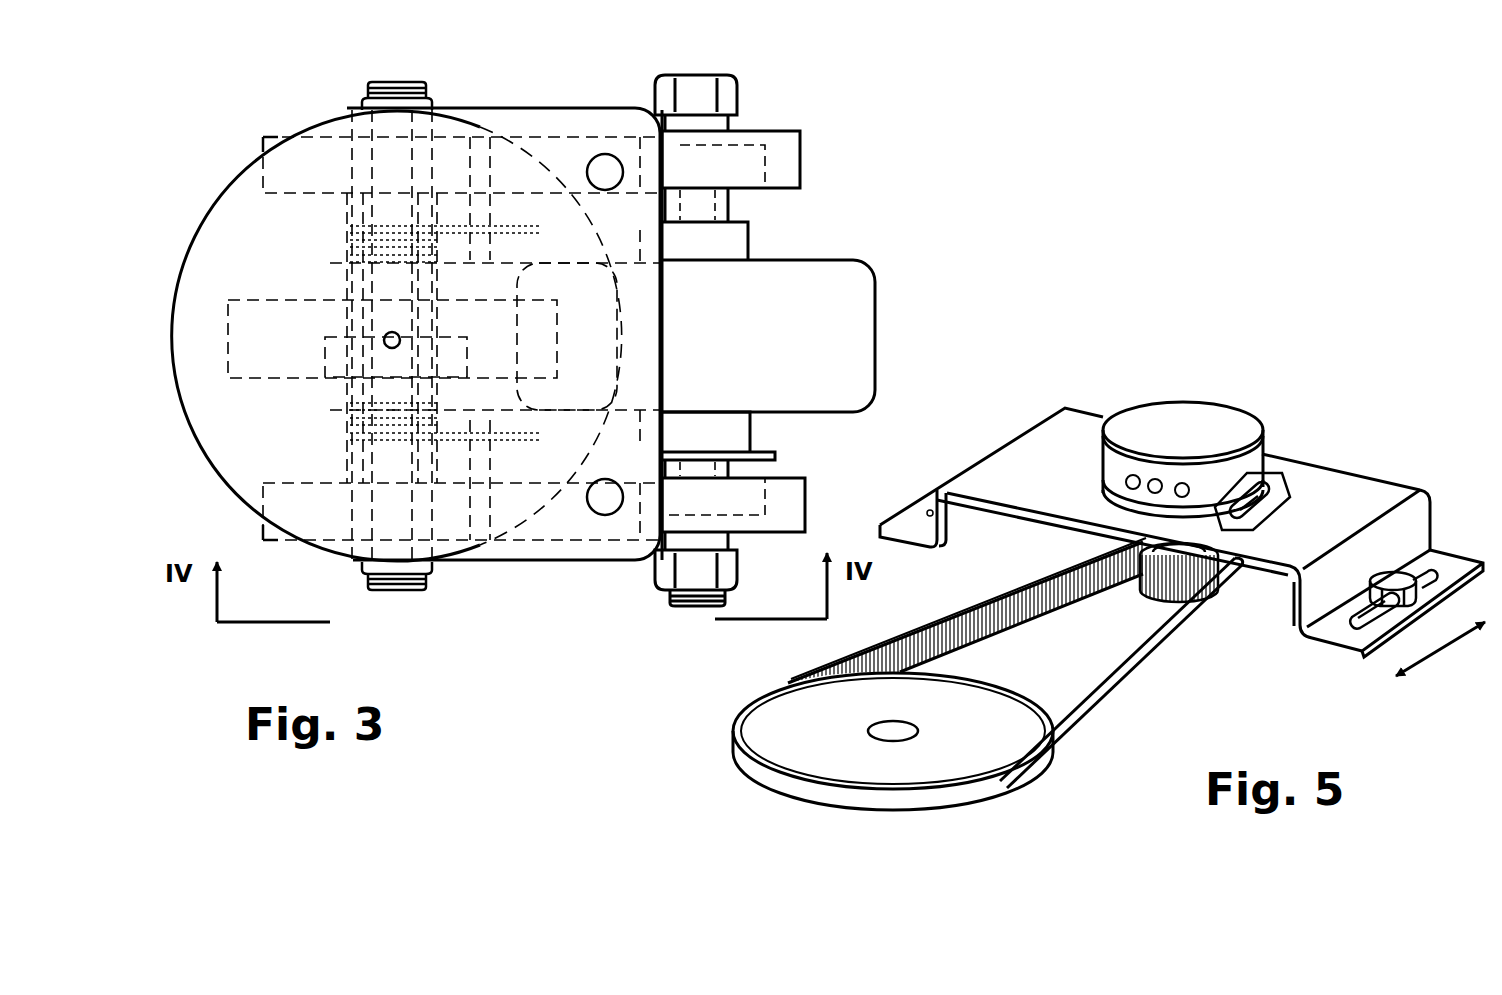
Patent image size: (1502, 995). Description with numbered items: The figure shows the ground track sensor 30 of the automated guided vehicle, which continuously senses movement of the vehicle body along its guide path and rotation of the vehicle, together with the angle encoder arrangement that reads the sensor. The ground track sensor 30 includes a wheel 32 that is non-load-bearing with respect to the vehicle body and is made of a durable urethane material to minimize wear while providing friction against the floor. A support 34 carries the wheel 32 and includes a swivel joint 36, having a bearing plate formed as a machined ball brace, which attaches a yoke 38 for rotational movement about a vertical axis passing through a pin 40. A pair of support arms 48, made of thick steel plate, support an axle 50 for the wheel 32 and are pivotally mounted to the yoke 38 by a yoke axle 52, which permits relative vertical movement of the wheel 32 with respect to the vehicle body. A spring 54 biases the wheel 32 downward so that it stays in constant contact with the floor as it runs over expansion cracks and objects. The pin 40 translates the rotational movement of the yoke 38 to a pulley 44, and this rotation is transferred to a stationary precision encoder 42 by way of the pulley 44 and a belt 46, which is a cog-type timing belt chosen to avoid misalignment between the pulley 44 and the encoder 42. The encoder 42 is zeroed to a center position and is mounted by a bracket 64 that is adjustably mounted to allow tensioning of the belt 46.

In FIG. 3, the ground track sensor 30 is at (534, 572).
In FIG. 3, the wheel 32 is at (858, 260).
In FIG. 3, the support 34 is at (806, 167).
In FIG. 3, the swivel joint 36 is at (238, 177).
In FIG. 3, the yoke 38 is at (290, 300).
In FIG. 3, the pin 40 is at (387, 333).
In FIG. 3, the support arms 48 is at (770, 131).
In FIG. 3, the axle 50 is at (732, 204).
In FIG. 3, the yoke axle 52 is at (397, 590).
In FIG. 3, the spring 54 is at (440, 248).
In FIG. 5, the encoder 42 is at (1193, 402).
In FIG. 5, the pulley 44 is at (1000, 692).
In FIG. 5, the belt 46 is at (1173, 640).
In FIG. 5, the bracket 64 is at (1040, 420).